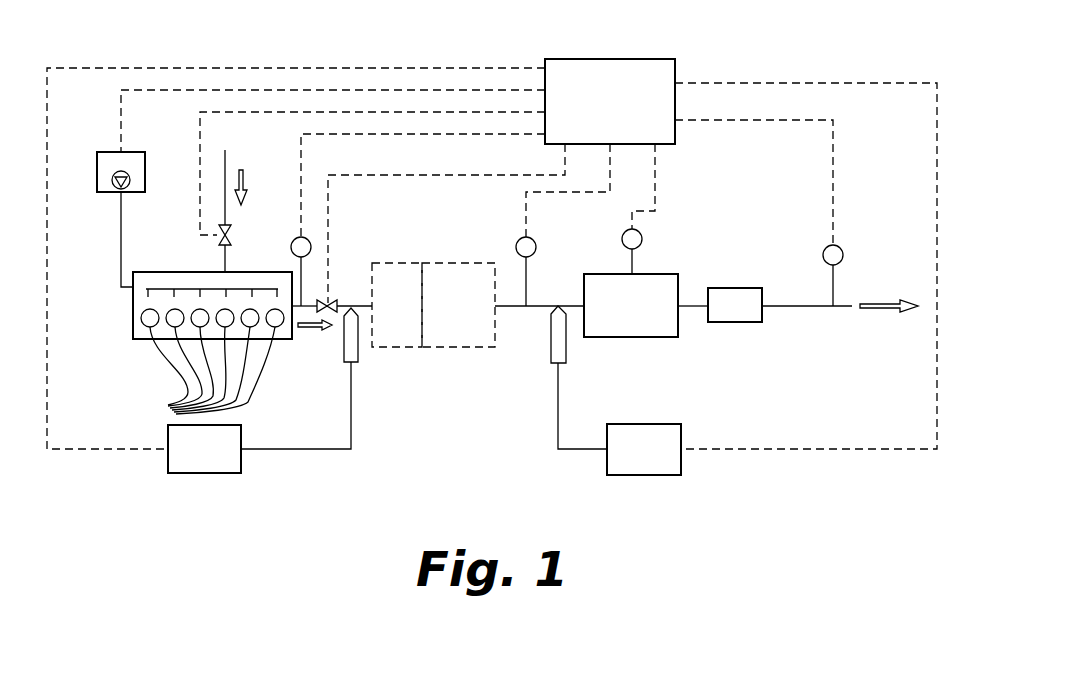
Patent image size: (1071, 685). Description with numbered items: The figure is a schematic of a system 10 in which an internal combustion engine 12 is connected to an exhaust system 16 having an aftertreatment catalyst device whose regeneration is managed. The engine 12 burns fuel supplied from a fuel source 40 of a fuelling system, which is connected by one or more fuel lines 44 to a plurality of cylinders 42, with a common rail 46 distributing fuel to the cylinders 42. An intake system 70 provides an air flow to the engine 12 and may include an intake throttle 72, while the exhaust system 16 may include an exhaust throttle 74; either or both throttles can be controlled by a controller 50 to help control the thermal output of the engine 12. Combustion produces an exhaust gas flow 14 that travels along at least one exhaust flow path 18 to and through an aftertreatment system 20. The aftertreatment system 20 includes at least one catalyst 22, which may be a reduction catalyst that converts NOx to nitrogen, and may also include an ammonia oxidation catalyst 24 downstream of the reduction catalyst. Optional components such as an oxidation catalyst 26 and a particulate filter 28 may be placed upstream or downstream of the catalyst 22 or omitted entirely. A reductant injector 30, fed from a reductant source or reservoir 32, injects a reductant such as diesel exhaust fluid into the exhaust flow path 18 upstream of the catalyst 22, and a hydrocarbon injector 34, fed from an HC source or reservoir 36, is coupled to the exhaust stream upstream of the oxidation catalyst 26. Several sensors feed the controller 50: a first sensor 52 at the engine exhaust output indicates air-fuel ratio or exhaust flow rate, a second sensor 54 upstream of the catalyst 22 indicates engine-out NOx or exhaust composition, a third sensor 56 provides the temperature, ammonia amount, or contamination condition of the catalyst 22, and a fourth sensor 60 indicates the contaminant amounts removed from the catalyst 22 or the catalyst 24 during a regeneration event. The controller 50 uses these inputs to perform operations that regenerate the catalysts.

The system 10 is at (111, 44).
The internal combustion engine 12 is at (133, 330).
The exhaust gas flow 14 is at (310, 333).
The exhaust system 16 is at (560, 237).
The exhaust flow path 18 is at (508, 308).
The aftertreatment system 20 is at (712, 359).
The catalyst 22 is at (619, 318).
The ammonia oxidation (AMOX) catalyst 24 is at (723, 318).
The oxidation catalyst 26 is at (385, 318).
The particulate filter 28 is at (446, 318).
The reductant injector 30 is at (566, 357).
The reductant source or reservoir 32 is at (632, 463).
The hydrocarbon (HC) injector 34 is at (358, 360).
The HC source or reservoir 36 is at (192, 463).
The fuel source 40 is at (103, 152).
The cylinders 42 is at (210, 374).
The fuel lines 44 is at (121, 215).
The common rail 46 is at (182, 288).
The controller 50 is at (598, 114).
The first sensor 52 is at (294, 239).
The second sensor 54 is at (516, 244).
The third sensor 56 is at (642, 236).
The fourth sensor 60 is at (843, 257).
The intake system 70 is at (225, 162).
The intake throttle 72 is at (232, 229).
The exhaust throttle 74 is at (331, 300).